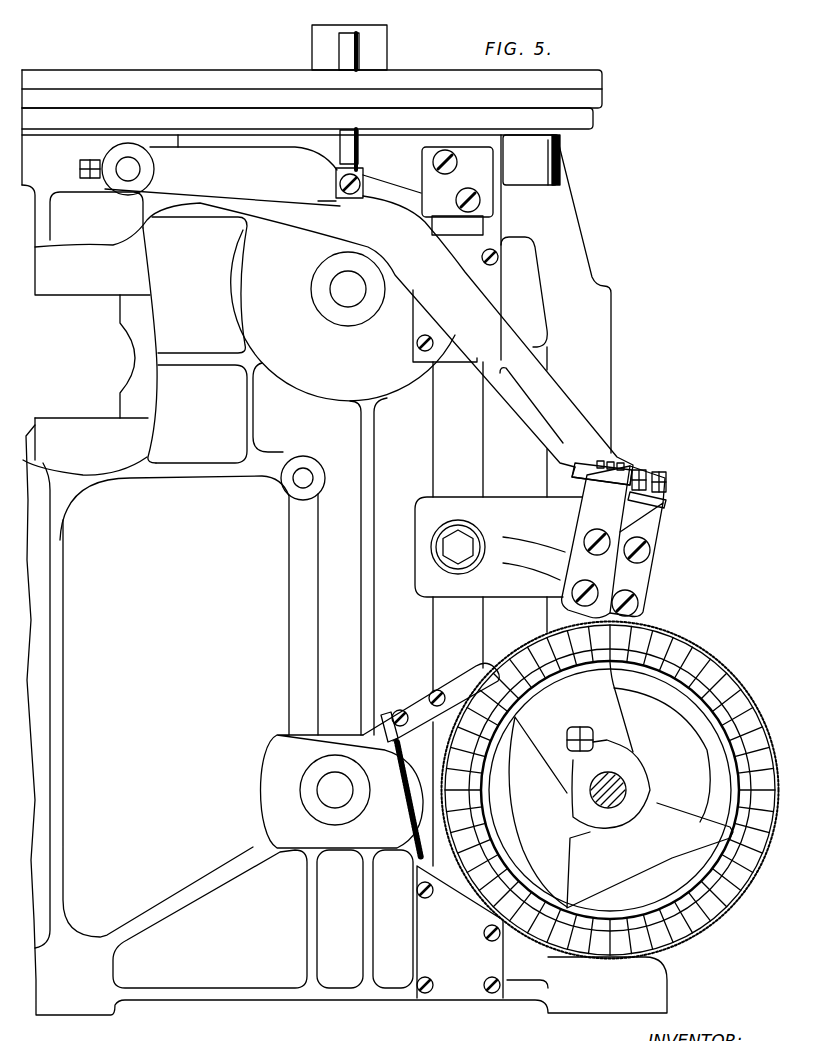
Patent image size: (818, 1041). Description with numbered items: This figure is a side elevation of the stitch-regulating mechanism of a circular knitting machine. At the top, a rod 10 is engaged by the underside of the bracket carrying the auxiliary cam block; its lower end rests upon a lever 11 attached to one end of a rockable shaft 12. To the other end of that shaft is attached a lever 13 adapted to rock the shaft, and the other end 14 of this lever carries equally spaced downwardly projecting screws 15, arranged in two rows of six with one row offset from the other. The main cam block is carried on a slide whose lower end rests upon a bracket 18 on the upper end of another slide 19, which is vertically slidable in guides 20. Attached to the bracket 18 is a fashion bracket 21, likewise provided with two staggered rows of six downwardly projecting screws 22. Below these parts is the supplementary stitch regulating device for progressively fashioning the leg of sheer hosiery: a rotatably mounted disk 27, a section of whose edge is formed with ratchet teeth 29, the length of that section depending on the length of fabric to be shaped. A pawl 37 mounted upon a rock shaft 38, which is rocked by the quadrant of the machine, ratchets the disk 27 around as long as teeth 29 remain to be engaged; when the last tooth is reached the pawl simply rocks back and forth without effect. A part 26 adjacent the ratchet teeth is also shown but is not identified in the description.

The rod 10 is at (359, 48).
The lever 11 is at (234, 176).
The rockable shaft 12 is at (130, 169).
The lever 13 is at (498, 340).
The other end of lever 14 is at (592, 455).
The screws 15 is at (628, 470).
The bracket 18 is at (457, 191).
The slide 19 is at (458, 614).
The guides 20 is at (458, 644).
The fashion bracket 21 is at (540, 542).
The screws 22 is at (660, 474).
The wheel rim 26 is at (702, 665).
The disk 27 is at (738, 900).
The ratchet teeth 29 is at (683, 650).
The pawl 37 is at (418, 703).
The rock shaft 38 is at (330, 789).